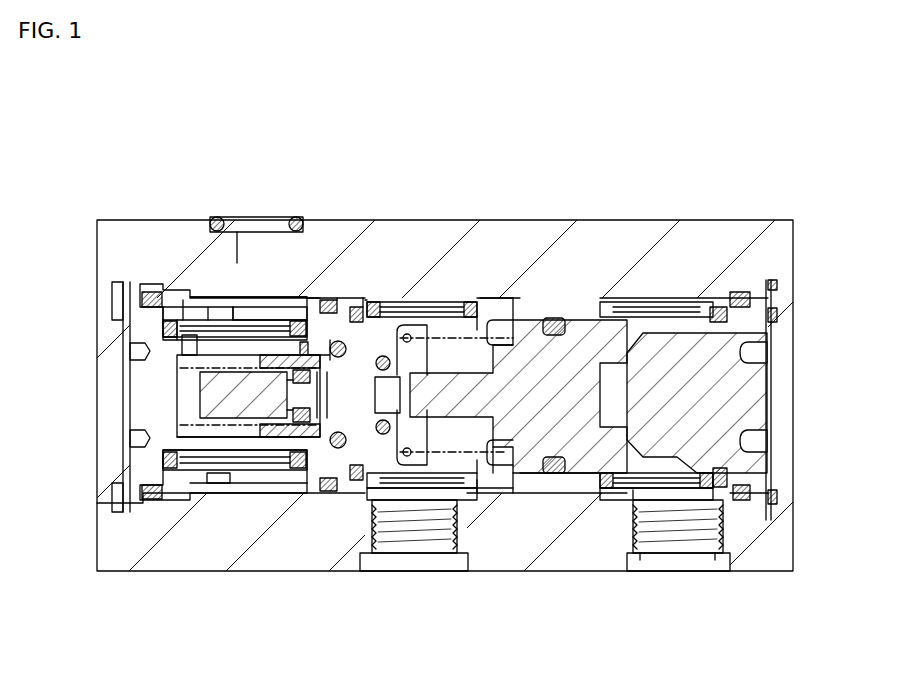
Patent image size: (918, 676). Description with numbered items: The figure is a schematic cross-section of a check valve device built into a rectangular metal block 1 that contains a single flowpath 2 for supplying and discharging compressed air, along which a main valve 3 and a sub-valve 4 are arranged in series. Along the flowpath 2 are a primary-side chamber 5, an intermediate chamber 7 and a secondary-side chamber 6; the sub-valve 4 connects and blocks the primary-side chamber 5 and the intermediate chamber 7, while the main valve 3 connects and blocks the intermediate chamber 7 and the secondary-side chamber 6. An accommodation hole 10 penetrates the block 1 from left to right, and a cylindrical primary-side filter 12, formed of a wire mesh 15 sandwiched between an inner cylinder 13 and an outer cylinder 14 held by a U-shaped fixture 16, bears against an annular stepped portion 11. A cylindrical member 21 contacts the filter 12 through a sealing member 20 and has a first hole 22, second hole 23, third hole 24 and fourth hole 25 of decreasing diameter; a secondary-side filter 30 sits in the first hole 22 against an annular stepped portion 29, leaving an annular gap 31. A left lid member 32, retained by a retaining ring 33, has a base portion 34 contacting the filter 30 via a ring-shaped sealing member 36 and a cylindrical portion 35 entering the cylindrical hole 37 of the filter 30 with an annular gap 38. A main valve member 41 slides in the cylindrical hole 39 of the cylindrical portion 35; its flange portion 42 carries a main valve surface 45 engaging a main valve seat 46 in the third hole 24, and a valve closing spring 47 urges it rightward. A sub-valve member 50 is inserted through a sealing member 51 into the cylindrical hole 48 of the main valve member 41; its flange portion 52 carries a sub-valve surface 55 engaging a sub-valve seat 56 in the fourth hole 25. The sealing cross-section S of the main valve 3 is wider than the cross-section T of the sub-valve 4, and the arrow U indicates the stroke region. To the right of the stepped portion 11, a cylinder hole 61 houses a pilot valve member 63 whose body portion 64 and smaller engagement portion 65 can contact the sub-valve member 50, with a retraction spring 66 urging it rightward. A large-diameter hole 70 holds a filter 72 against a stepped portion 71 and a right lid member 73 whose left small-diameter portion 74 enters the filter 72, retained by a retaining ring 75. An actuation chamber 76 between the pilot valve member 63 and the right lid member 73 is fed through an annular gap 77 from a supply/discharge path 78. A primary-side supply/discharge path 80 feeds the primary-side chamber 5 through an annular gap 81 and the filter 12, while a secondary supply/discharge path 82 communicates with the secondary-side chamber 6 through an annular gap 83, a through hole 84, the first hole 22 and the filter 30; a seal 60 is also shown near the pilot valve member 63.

The rectangular block 1 is at (775, 218).
The flowpath 2 is at (502, 482).
The main valve 3 is at (345, 480).
The sub-valve 4 is at (418, 446).
The primary-side chamber 5 is at (472, 480).
The secondary-side chamber 6 is at (292, 323).
The intermediate chamber 7 is at (390, 357).
The accommodation hole 10 is at (552, 326).
The annular stepped portion 11 is at (455, 345).
The primary-side filter 12 is at (458, 298).
The inner cylinder 13 is at (443, 306).
The outer cylinder 14 is at (493, 312).
The wire mesh 15 is at (480, 306).
The U-shaped fixture 16 is at (525, 315).
The sealing member 20 is at (343, 343).
The cylindrical member 21 is at (135, 284).
The first hole 22 is at (165, 322).
The second hole 23 is at (326, 312).
The third hole 24 is at (306, 346).
The fourth hole 25 is at (420, 357).
The annular stepped portion 29 is at (311, 338).
The secondary-side filter 30 is at (278, 299).
The annular gap 31 is at (250, 318).
The left lid member 32 is at (120, 457).
The retaining ring 33 is at (118, 284).
The base portion 34 is at (148, 420).
The cylindrical portion 35 is at (175, 330).
The ring-shaped sealing member 36 is at (152, 351).
The cylindrical hole 37 is at (157, 285).
The annular gap 38 is at (220, 311).
The cylindrical hole 39 is at (152, 397).
The main valve member 41 is at (240, 437).
The flange portion 42 is at (302, 447).
The main valve surface 45 is at (333, 455).
The main valve seat 46 is at (322, 472).
The valve closing spring 47 is at (183, 364).
The cylindrical hole 48 is at (277, 440).
The sub-valve member 50 is at (262, 437).
The sealing member 51 is at (292, 437).
The flange portion 52 is at (362, 482).
The sub-valve surface 55 is at (425, 497).
The sub-valve seat 56 is at (378, 492).
The seal 60 is at (580, 307).
The cylinder hole 61 is at (600, 482).
The pilot valve member 63 is at (566, 468).
The body portion 64 is at (556, 470).
The engagement portion 65 is at (490, 462).
The retraction spring 66 is at (512, 480).
The large-diameter hole 70 is at (620, 496).
The stepped portion 71 is at (610, 500).
The filter 72 is at (667, 500).
The right lid member 73 is at (771, 325).
The left small-diameter portion 74 is at (657, 375).
The retaining ring 75 is at (777, 296).
The actuation chamber 76 is at (635, 500).
The annular gap 77 is at (692, 545).
The supply/discharge path 78 is at (713, 560).
The primary-side supply/discharge path 80 is at (428, 560).
The annular gap 81 is at (447, 507).
The secondary supply/discharge path 82 is at (237, 216).
The annular gap 83 is at (183, 323).
The through hole 84 is at (203, 305).
The cross-section of main valve sealing portion S is at (456, 343).
The cross-section of sub-valve sealing portion T is at (430, 360).
The stroke U is at (327, 387).